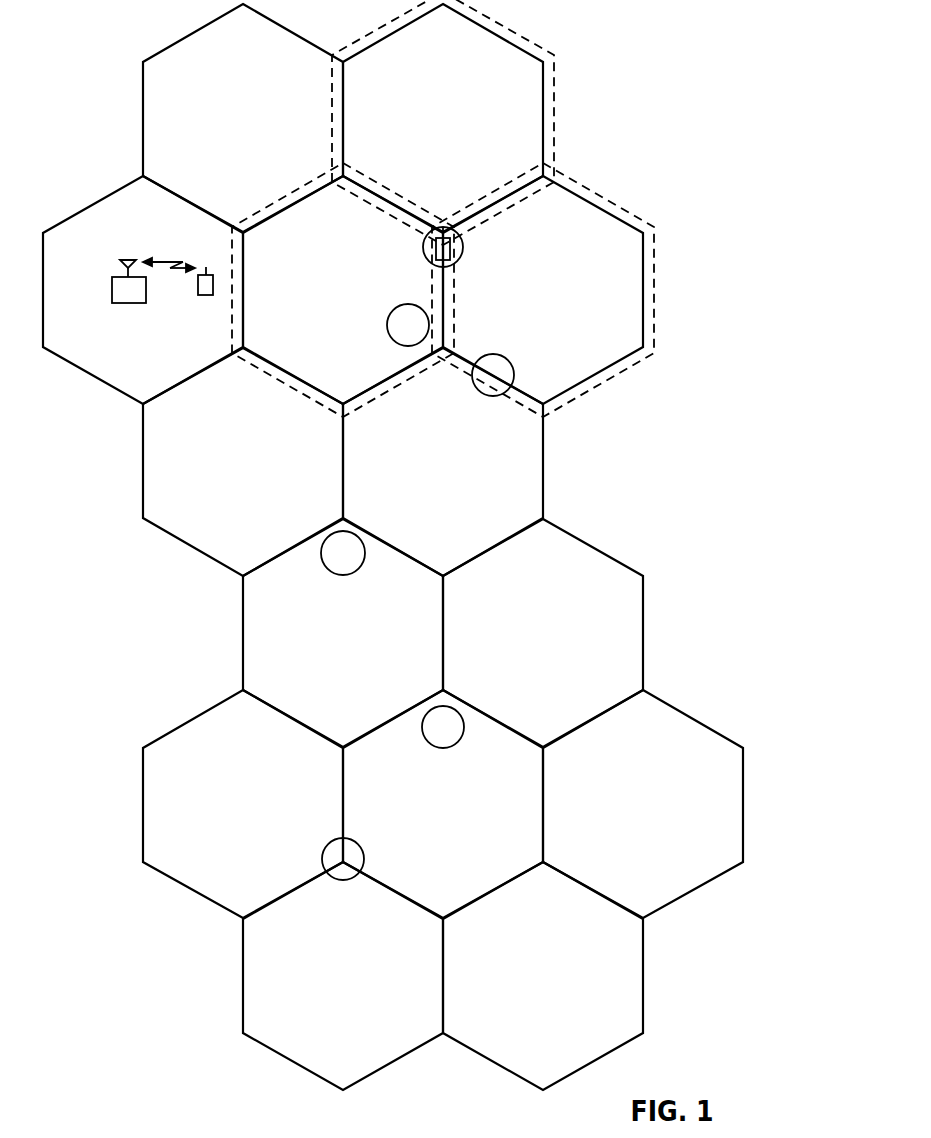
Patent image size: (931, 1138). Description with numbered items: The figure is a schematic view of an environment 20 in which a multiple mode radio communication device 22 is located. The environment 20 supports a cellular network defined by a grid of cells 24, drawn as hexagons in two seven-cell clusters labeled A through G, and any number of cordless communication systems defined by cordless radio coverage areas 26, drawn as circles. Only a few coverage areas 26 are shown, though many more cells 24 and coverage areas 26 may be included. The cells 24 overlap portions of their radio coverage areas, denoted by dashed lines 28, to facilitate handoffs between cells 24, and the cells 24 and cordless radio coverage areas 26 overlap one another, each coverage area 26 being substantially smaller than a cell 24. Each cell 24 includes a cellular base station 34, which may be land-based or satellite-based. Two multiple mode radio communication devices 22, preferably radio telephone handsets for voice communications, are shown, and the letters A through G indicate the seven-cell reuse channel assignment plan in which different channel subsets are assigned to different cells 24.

The environment 20 is at (393, 564).
The multiple mode radio communication device 22 is at (450, 264).
The cell 24 is at (142, 106).
The cordless radio coverage area 26 is at (423, 249).
The dashed lines 28 is at (283, 195).
The cellular base station 34 is at (112, 280).